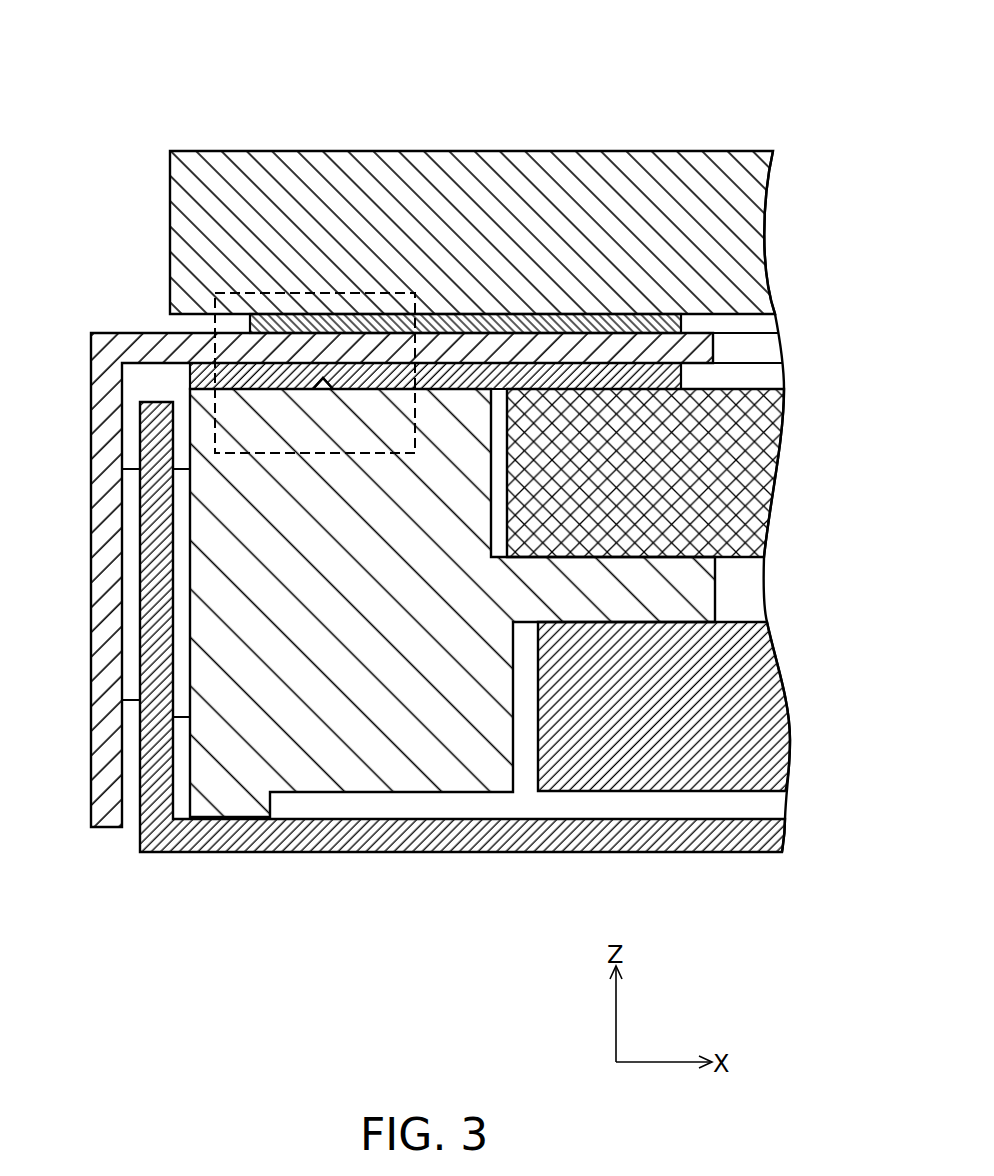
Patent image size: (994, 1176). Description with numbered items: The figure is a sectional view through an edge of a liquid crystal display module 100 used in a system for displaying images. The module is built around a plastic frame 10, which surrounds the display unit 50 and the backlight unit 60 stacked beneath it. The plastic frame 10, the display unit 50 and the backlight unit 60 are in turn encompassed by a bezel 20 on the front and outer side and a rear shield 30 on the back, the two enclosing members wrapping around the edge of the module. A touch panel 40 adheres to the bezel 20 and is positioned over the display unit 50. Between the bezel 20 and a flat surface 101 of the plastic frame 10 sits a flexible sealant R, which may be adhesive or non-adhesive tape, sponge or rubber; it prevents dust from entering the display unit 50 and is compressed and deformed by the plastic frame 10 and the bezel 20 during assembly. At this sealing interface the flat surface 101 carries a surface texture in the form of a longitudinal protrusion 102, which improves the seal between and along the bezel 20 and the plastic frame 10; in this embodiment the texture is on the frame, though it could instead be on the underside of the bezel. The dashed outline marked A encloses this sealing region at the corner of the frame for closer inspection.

The liquid crystal display module 100 is at (110, 36).
The plastic frame 10 is at (232, 808).
The bezel 20 is at (122, 347).
The rear shield 30 is at (571, 844).
The touch panel 40 is at (528, 160).
The display unit 50 is at (772, 458).
The backlight unit 60 is at (772, 693).
The flat surface 101 is at (248, 388).
The longitudinal protrusion 102 is at (300, 389).
The region A is at (218, 290).
The flexible sealant R is at (683, 374).